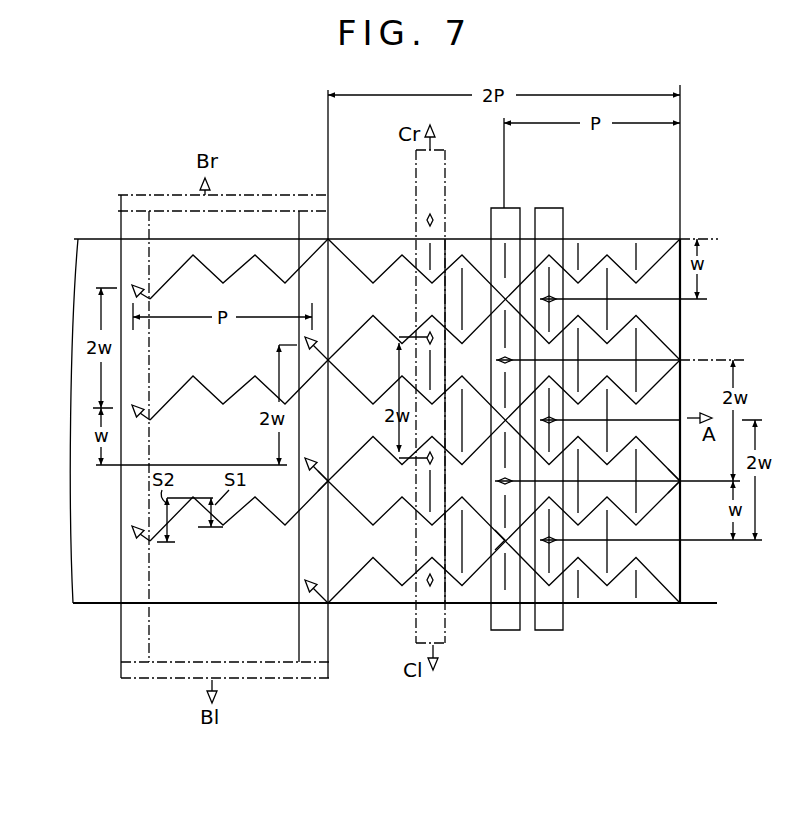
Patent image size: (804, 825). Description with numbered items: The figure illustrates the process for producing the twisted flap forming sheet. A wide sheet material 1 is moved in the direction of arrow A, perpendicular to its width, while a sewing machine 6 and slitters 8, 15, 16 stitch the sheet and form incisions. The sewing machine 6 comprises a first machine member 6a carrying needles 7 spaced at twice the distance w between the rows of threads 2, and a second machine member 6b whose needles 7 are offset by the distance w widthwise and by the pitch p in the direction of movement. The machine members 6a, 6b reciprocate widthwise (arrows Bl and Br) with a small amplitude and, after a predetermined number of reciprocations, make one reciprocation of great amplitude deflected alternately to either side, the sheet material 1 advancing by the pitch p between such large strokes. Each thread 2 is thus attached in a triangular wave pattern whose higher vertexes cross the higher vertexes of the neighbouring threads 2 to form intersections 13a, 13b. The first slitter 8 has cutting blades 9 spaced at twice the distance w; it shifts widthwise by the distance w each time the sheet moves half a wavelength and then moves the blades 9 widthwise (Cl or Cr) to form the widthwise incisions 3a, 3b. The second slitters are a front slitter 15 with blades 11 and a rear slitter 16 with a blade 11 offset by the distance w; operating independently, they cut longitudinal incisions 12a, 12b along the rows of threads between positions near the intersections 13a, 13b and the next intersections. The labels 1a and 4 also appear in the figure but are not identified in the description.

The sheet material 1 is at (76, 399).
The lower edge of sheet 1a is at (613, 604).
The thread 2 is at (700, 599).
The incision 3a is at (430, 480).
The incision 3b is at (460, 527).
The side edge line 4 is at (683, 553).
The sewing machine 6 is at (180, 663).
The first machine member 6a is at (123, 623).
The second machine member 6b is at (326, 622).
The needle 7 is at (131, 527).
The first slitter 8 is at (418, 628).
The cutting blade 9 is at (422, 586).
The cutting blade 11 is at (500, 477).
The longitudinal incision 12a is at (656, 477).
The longitudinal incision 12b is at (662, 538).
The intersection 13a is at (683, 482).
The intersection 13b is at (333, 480).
The front slitter 15 is at (493, 617).
The rear slitter 16 is at (566, 612).